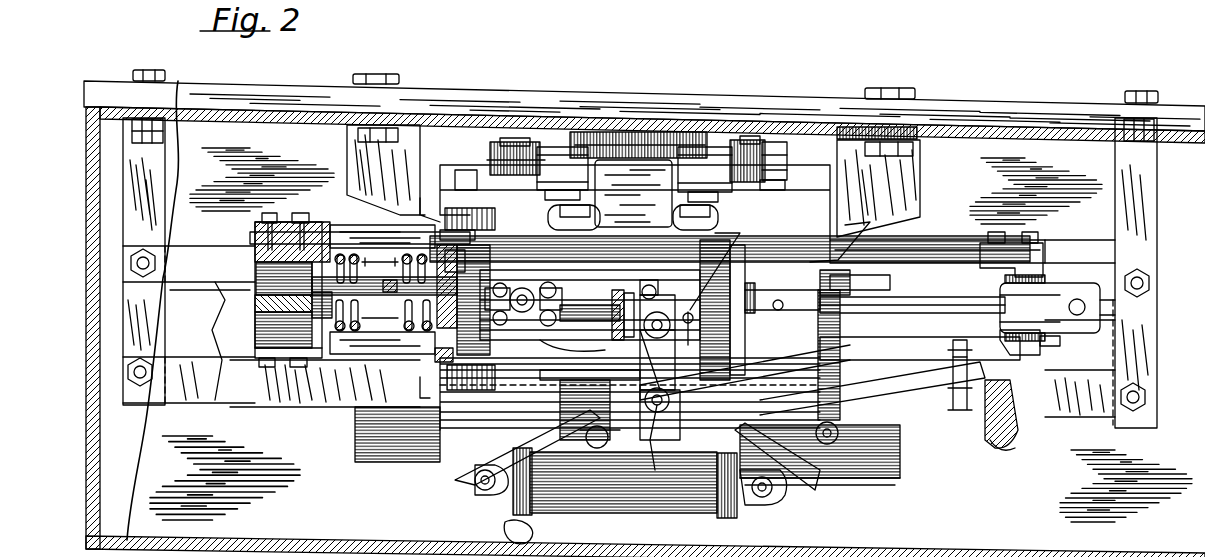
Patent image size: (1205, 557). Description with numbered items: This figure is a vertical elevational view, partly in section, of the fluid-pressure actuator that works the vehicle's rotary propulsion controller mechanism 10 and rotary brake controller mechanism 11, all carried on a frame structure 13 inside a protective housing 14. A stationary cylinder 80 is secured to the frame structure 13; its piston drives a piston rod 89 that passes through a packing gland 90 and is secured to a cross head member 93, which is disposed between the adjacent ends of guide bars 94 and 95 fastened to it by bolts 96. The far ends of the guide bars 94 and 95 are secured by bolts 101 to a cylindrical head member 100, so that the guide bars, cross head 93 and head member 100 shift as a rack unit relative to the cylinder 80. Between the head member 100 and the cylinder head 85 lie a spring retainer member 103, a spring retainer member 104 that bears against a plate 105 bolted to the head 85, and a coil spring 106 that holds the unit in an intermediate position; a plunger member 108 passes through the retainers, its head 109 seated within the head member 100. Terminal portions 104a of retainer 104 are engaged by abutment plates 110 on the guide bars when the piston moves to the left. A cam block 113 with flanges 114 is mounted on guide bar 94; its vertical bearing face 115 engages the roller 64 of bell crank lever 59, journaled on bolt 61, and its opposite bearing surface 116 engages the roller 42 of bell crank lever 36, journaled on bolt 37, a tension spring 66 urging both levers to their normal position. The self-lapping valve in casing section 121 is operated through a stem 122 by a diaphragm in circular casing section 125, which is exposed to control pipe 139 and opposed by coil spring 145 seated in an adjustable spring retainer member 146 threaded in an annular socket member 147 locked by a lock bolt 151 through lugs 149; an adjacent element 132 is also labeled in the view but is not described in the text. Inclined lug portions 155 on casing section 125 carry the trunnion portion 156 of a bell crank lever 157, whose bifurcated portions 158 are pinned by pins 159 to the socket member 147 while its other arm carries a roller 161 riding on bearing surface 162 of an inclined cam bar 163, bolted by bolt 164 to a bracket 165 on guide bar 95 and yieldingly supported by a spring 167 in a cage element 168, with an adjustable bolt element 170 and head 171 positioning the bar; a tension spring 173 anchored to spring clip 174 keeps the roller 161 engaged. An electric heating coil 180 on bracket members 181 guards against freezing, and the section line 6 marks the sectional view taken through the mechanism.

The section line 6 is at (420, 295).
The rotary propulsion controller mechanism 10 is at (862, 465).
The rotary brake controller mechanism 11 is at (378, 450).
The frame structure 13 is at (290, 392).
The protective housing 14 is at (952, 530).
The bell crank lever 36 is at (780, 172).
The bolt 37 is at (768, 150).
The roller 42 is at (775, 142).
The bell crank lever 59 is at (490, 162).
The bolt 61 is at (512, 140).
The roller 64 is at (565, 148).
The tension spring 66 is at (690, 148).
The cylinder 80 is at (770, 238).
The head 85 is at (470, 240).
The piston rod 89 is at (915, 312).
The packing gland 90 is at (850, 285).
The cross head member 93 is at (1060, 325).
The guide bar 94 is at (968, 240).
The guide bar 95 is at (895, 345).
The bolts 96 is at (1030, 234).
The cylindrical head member 100 is at (256, 330).
The bolts 101 is at (300, 213).
The spring retainer member 103 is at (330, 235).
The spring retainer member 104 is at (435, 340).
The terminal portions 104a is at (445, 230).
The plate 105 is at (445, 250).
The coil spring 106 is at (355, 332).
The plunger member 108 is at (398, 300).
The head 109 is at (284, 280).
The abutment plates 110 is at (485, 222).
The cam block 113 is at (640, 133).
The flanges 114 is at (670, 230).
The vertical bearing face 115 is at (592, 133).
The bearing surface 116 is at (735, 140).
The casing section 121 is at (516, 300).
The stem 122 is at (588, 322).
The circular casing section 125 is at (700, 270).
The link 132 is at (540, 300).
The control pipe 139 is at (775, 305).
The coil spring 145 is at (700, 318).
The adjustable spring retainer member 146 is at (610, 310).
The annular socket member 147 is at (663, 292).
The lugs 149 is at (645, 300).
The lock bolt 151 is at (655, 292).
The lug portions 155 is at (648, 400).
The trunnion portion 156 is at (658, 430).
The bell crank lever 157 is at (720, 392).
The bifurcated portions 158 is at (615, 340).
The pins 159 is at (695, 328).
The roller 161 is at (845, 450).
The bearing surface 162 is at (840, 433).
The inclined cam bar 163 is at (900, 398).
The bolt 164 is at (586, 440).
The bracket 165 is at (585, 400).
The spring 167 is at (1018, 432).
The cage element 168 is at (1005, 452).
The adjustable bolt element 170 is at (960, 343).
The head 171 is at (960, 400).
The tension spring 173 is at (840, 335).
The spring clip 174 is at (810, 275).
The electric heating coil 180 is at (676, 503).
The bracket members 181 is at (470, 478).